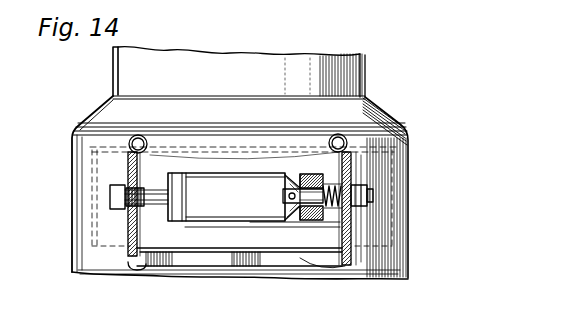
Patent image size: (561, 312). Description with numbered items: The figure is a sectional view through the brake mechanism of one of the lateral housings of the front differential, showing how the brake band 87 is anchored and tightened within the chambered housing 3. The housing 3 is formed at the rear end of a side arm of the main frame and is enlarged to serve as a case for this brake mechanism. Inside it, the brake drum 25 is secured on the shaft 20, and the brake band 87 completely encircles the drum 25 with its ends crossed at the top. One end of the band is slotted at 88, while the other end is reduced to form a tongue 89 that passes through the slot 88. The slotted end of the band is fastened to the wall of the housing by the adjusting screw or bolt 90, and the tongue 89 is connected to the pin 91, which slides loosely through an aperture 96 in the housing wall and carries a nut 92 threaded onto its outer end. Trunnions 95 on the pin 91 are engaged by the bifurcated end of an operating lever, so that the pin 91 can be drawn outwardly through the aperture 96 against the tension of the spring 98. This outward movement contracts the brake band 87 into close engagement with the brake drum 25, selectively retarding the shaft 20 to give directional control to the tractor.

The chambered housing 3 is at (113, 72).
The shaft 20 is at (240, 256).
The brake drum 25 is at (227, 256).
The brake band 87 is at (293, 233).
The slot 88 is at (225, 172).
The tongue 89 is at (252, 187).
The adjusting screw or bolt 90 is at (110, 199).
The pin 91 is at (373, 206).
The nut 92 is at (366, 196).
The trunnions 95 is at (408, 138).
The aperture 96 is at (355, 183).
The spring 98 is at (312, 173).